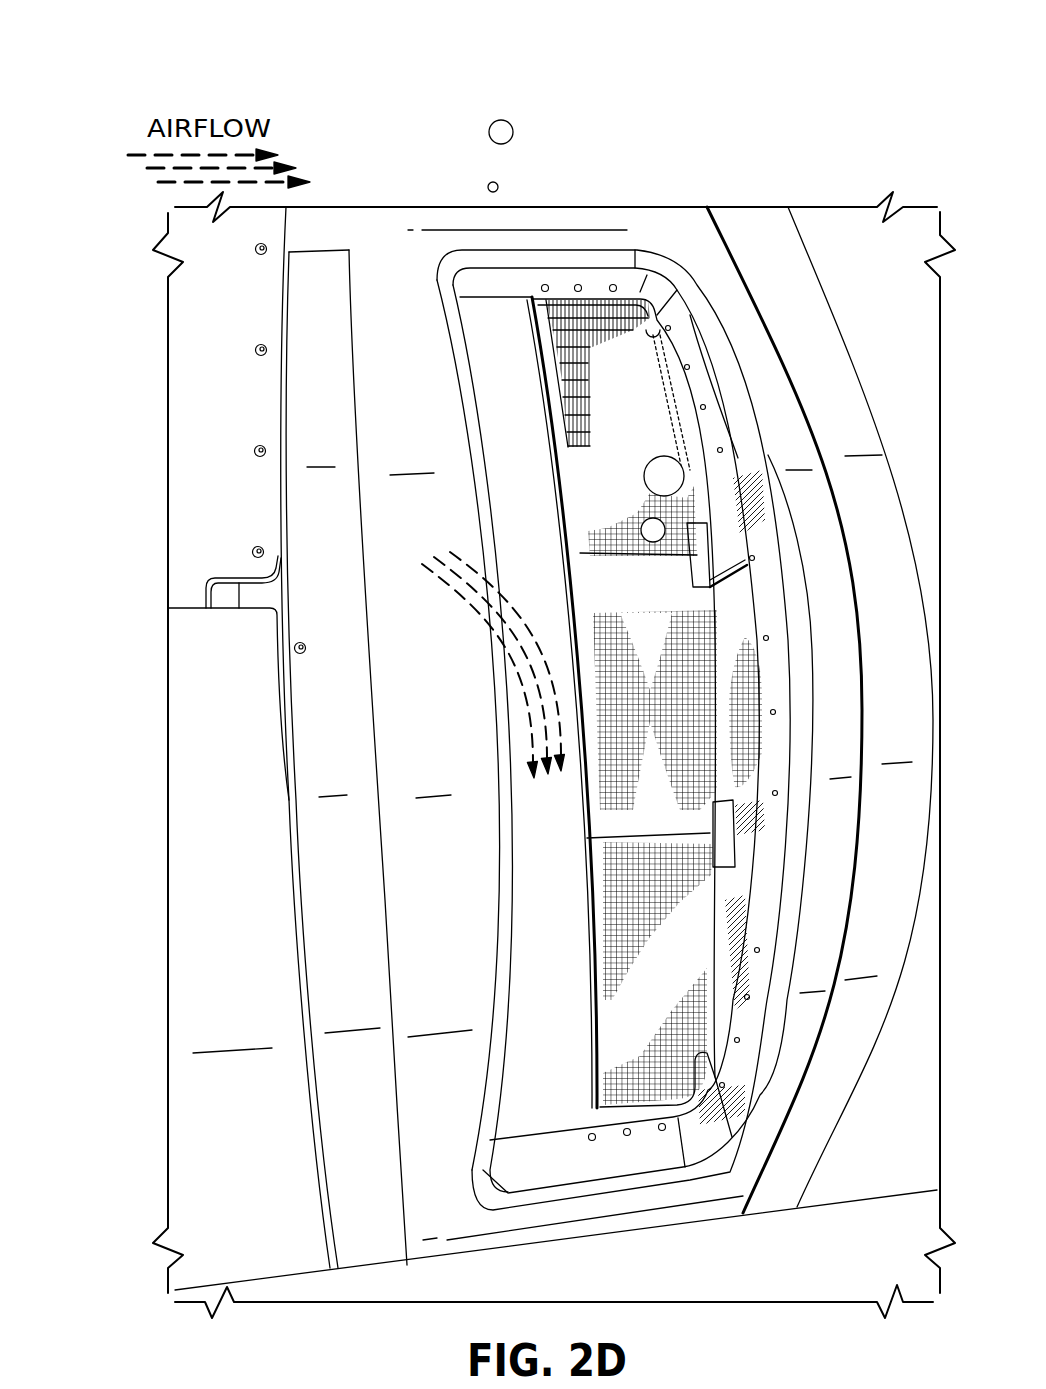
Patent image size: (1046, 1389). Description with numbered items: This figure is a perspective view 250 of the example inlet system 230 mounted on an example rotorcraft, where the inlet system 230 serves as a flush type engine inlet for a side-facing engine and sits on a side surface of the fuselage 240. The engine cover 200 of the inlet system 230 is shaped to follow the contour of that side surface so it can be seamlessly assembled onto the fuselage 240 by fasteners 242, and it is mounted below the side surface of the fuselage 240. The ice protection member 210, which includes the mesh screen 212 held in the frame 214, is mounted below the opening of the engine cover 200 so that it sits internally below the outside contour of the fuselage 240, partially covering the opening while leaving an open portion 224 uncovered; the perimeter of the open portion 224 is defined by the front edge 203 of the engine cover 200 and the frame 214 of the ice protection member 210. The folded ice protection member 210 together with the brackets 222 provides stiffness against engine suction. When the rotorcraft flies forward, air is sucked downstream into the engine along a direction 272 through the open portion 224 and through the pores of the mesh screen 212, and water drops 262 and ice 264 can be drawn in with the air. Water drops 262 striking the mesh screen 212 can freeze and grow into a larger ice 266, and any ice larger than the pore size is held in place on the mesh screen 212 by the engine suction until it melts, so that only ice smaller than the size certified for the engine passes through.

The engine cover 200 is at (680, 250).
The front edge 203 is at (503, 940).
The ice protection member 210 is at (515, 375).
The mesh screen 212 is at (595, 431).
The frame 214 is at (578, 508).
The brackets 222 is at (700, 806).
The open portion 224 is at (500, 434).
The inlet system 230 is at (597, 222).
The fuselage 240 is at (180, 642).
The fasteners 242 is at (256, 545).
The perspective view 250 is at (90, 54).
The water drops 262 is at (488, 181).
The ice 264 is at (488, 125).
The ice 266 is at (668, 458).
The direction 272 is at (477, 650).